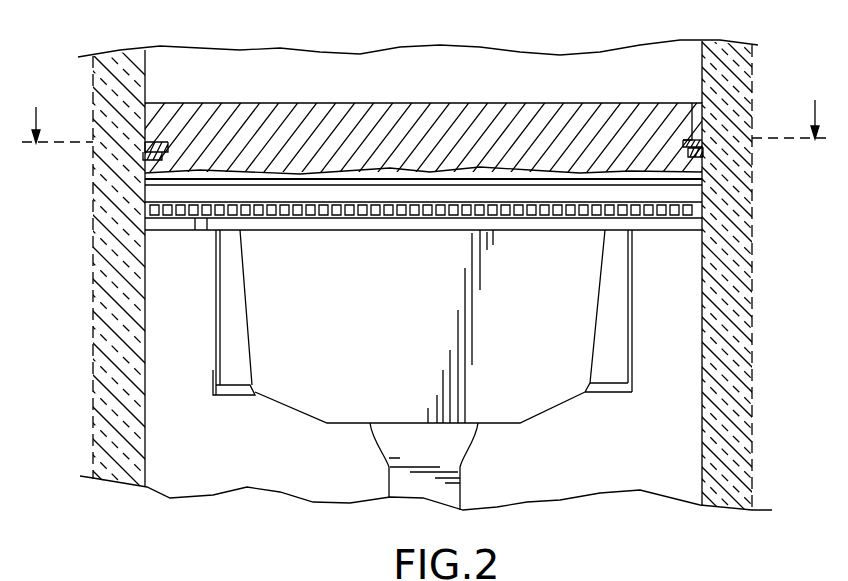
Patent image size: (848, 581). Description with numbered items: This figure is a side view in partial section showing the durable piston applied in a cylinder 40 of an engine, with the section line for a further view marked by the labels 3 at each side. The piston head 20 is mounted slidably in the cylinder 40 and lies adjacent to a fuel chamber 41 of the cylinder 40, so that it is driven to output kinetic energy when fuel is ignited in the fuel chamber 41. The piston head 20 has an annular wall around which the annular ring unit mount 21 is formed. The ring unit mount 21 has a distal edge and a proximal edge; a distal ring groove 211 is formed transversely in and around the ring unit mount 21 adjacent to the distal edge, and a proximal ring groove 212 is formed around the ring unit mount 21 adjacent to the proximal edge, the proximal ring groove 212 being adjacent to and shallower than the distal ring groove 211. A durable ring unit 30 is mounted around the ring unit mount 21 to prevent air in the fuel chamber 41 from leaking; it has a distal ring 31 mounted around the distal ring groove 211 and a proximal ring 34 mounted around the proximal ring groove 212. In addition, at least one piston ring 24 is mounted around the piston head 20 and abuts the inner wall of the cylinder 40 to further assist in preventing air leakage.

The section line 3- 3 is at (425, 108).
The piston head 20 is at (401, 110).
The ring unit mount 21 is at (687, 140).
The distal ring groove 211 is at (683, 143).
The proximal ring groove 212 is at (688, 152).
The piston ring 24 is at (700, 178).
The durable ring unit 30 is at (714, 136).
The distal ring 31 is at (692, 133).
The proximal ring 34 is at (702, 153).
The cylinder 40 is at (740, 302).
The fuel chamber 41 is at (430, 62).